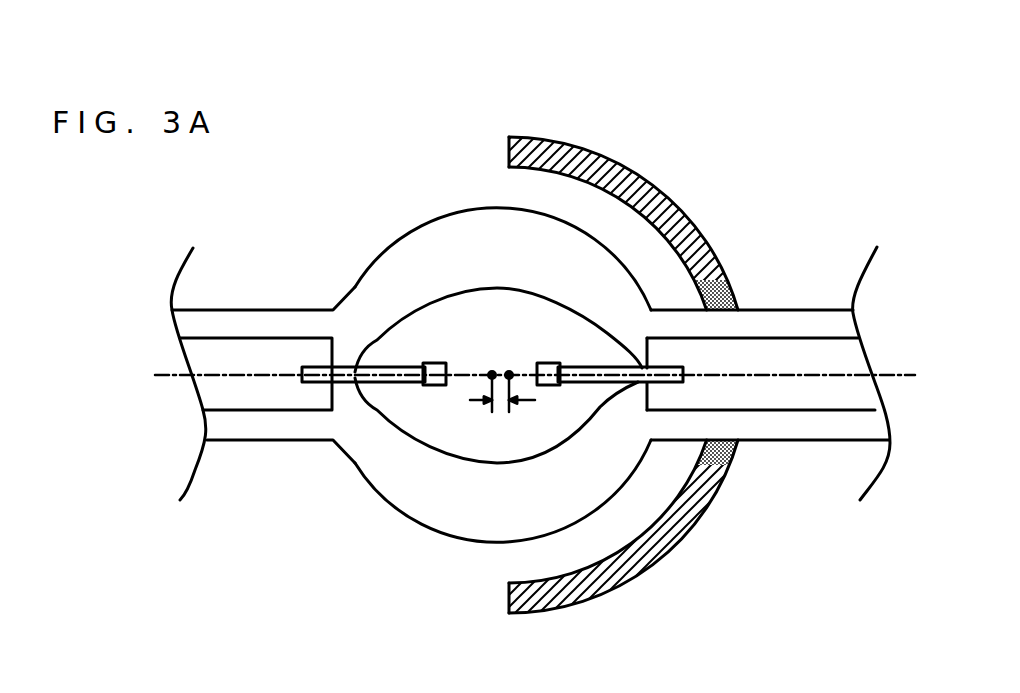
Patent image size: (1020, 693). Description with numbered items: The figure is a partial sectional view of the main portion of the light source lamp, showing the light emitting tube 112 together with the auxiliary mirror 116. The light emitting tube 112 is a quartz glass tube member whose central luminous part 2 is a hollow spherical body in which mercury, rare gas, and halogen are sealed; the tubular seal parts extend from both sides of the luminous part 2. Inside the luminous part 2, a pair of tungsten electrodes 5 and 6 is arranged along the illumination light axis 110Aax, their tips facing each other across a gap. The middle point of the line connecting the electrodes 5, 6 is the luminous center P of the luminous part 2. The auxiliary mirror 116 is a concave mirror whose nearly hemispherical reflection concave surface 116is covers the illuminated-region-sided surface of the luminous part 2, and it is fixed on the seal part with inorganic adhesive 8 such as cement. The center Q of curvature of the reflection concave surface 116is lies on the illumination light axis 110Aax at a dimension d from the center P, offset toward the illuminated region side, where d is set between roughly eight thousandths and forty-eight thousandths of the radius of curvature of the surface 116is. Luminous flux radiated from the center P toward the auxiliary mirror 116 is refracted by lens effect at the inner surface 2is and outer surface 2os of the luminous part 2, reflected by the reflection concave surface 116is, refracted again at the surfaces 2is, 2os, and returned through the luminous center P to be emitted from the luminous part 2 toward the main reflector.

The light emitting tube 112 is at (324, 188).
The luminous part 2 is at (370, 282).
The inner surface of the luminous part 2is is at (393, 417).
The outer surface of the luminous part 2os is at (388, 510).
The electrode 5 is at (427, 387).
The electrode 6 is at (563, 385).
The inorganic adhesive 8 is at (740, 291).
The auxiliary mirror 116 is at (655, 183).
The reflection concave surface 116is is at (517, 572).
The illumination light axis 110Aax is at (763, 377).
The center of the luminous part P is at (492, 372).
The center of curvature Q is at (509, 372).
The dimension between center of curvature and center of the luminous part d is at (502, 409).